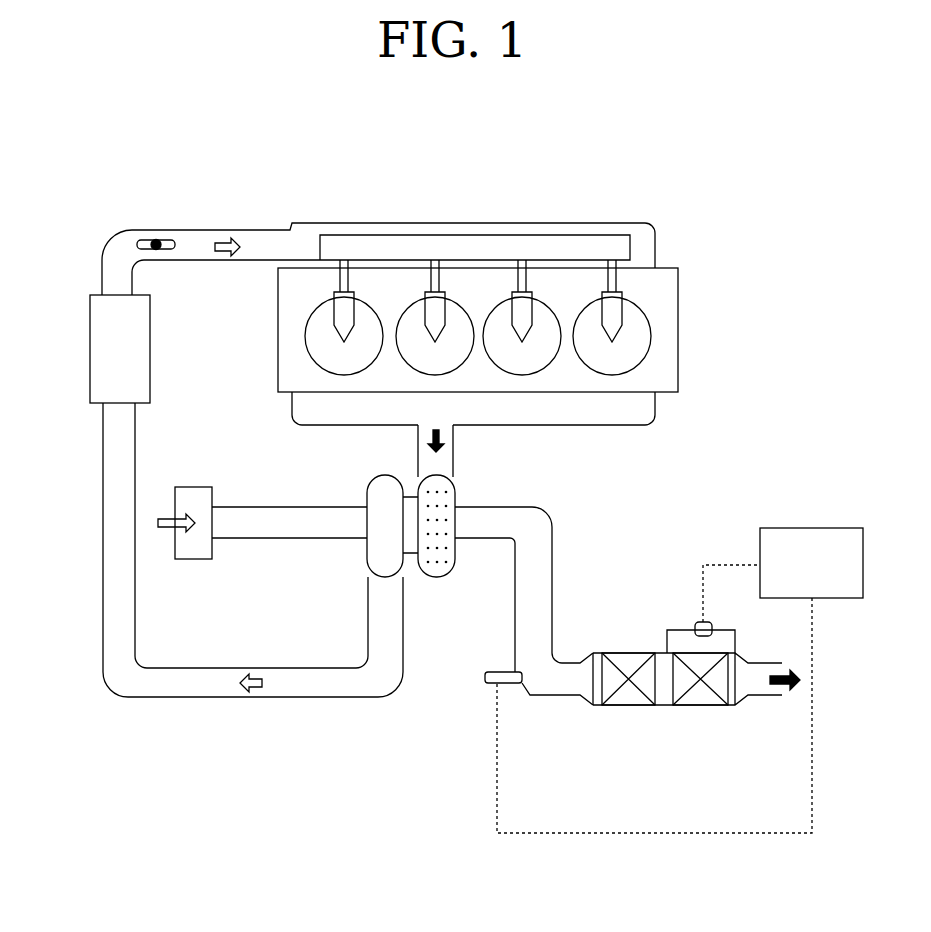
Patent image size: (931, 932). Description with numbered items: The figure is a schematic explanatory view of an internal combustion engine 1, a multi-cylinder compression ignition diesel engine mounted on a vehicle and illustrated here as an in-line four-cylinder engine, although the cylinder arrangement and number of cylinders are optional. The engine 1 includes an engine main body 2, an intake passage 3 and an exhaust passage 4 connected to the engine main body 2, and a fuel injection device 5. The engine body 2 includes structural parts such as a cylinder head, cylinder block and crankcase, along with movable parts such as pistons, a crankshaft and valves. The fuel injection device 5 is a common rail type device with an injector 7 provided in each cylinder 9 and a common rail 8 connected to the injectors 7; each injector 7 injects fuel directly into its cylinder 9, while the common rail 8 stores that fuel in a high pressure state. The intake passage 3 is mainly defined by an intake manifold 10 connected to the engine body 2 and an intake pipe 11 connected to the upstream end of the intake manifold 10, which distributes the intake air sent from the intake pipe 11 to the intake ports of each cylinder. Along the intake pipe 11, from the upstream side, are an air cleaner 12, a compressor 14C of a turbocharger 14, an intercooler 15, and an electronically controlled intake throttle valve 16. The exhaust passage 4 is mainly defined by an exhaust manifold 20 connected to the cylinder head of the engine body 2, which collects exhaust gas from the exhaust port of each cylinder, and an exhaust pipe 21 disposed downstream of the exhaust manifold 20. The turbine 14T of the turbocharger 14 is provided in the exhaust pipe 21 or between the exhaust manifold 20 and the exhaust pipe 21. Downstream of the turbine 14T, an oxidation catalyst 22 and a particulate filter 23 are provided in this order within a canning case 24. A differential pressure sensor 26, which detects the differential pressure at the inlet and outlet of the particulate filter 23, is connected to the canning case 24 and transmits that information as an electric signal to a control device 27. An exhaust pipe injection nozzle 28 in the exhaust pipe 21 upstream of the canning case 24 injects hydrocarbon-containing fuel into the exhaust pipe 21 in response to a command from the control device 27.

The engine 1 is at (446, 480).
The engine main body 2 is at (276, 280).
The intake passage 3 is at (101, 467).
The exhaust passage 4 is at (561, 549).
The fuel injection device 5 is at (622, 222).
The injector 7 is at (333, 318).
The common rail 8 is at (403, 232).
The cylinder 9 is at (307, 345).
The intake manifold 10 is at (498, 225).
The intake pipe 11 is at (100, 262).
The air cleaner 12 is at (196, 560).
The turbocharger 14 is at (373, 472).
The compressor 14C is at (366, 550).
The turbine 14T is at (462, 550).
The intercooler 15 is at (90, 352).
The intake throttle valve 16 is at (150, 242).
The exhaust manifold 20 is at (573, 427).
The exhaust pipe 21 is at (513, 602).
The oxidation catalyst 22 is at (637, 697).
The particulate filter 23 is at (701, 697).
The canning case 24 is at (736, 705).
The differential pressure sensor 26 is at (697, 623).
The control device 27 is at (799, 577).
The exhaust pipe injection nozzle 28 is at (486, 684).